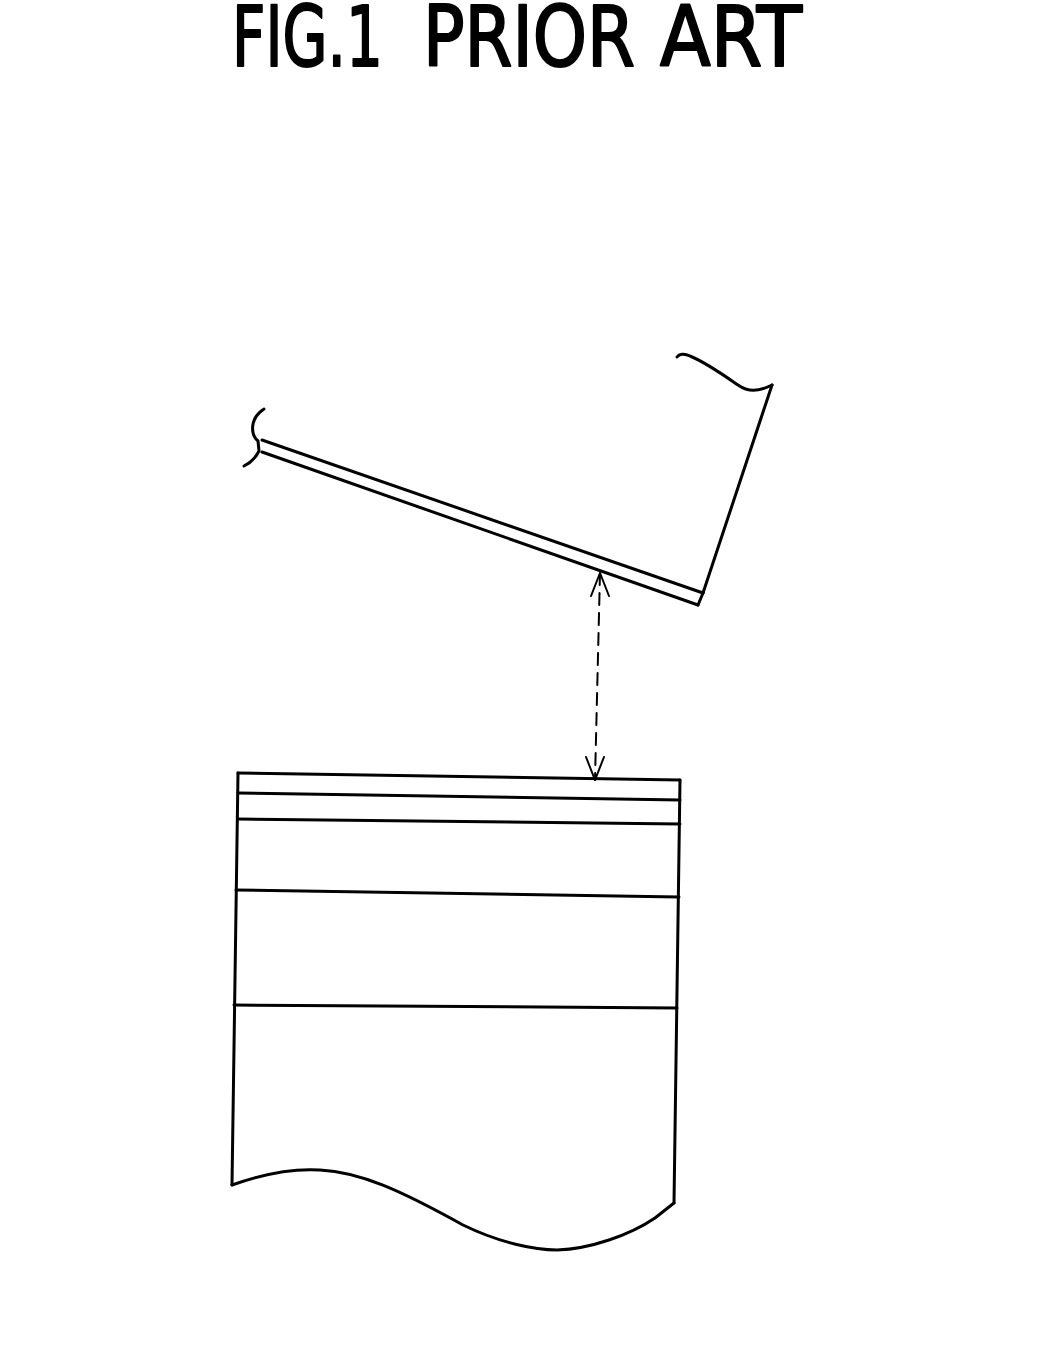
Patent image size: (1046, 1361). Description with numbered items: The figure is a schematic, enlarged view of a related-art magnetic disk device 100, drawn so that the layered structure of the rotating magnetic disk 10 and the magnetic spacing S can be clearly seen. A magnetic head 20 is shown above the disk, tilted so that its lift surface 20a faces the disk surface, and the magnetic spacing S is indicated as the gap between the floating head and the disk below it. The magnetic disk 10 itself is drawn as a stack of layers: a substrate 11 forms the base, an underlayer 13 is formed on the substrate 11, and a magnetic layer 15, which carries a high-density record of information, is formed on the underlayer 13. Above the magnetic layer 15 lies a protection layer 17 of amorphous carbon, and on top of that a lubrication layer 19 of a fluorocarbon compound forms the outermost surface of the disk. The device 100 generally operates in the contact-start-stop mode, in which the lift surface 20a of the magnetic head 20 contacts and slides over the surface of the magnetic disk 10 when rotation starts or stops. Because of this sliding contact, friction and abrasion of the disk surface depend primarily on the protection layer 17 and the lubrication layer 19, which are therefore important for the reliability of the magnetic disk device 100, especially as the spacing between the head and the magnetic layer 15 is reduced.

The magnetic disk device 100 is at (728, 259).
The magnetic head 20 is at (750, 458).
The lift surface 20a is at (698, 605).
The magnetic spacing S is at (579, 676).
The magnetic disk 10 is at (202, 832).
The lubrication layer 19 is at (680, 788).
The protection layer 17 is at (676, 812).
The magnetic layer 15 is at (668, 870).
The underlayer 13 is at (666, 960).
The substrate 11 is at (665, 1135).